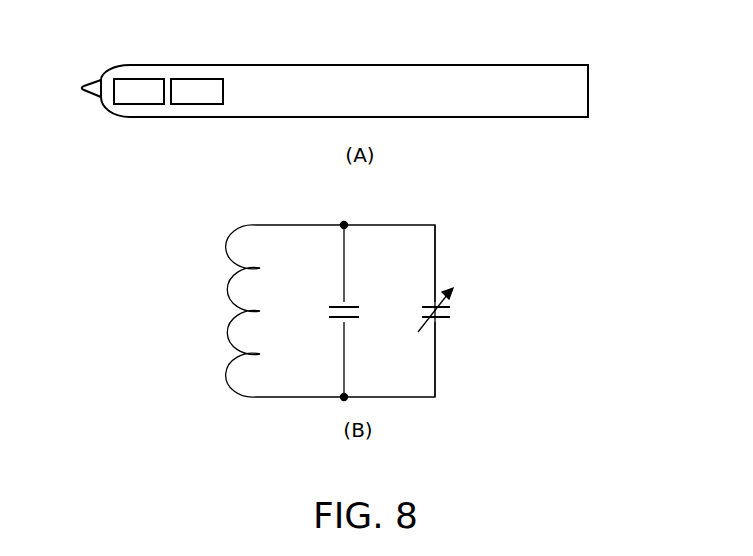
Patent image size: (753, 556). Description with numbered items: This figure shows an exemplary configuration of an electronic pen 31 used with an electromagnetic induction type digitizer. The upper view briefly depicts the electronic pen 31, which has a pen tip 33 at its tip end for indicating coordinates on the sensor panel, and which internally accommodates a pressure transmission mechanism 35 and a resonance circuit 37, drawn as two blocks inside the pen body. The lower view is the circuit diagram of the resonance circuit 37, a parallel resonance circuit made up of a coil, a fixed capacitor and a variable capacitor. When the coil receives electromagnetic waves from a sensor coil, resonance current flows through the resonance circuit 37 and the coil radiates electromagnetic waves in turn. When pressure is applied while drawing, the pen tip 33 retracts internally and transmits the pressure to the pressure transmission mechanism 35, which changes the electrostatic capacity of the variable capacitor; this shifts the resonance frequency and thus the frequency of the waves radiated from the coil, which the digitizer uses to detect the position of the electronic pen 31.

The electronic pen 31 is at (550, 65).
The pen tip 33 is at (97, 82).
The pressure transmission mechanism 35 is at (138, 78).
The resonance circuit 37 is at (193, 78).